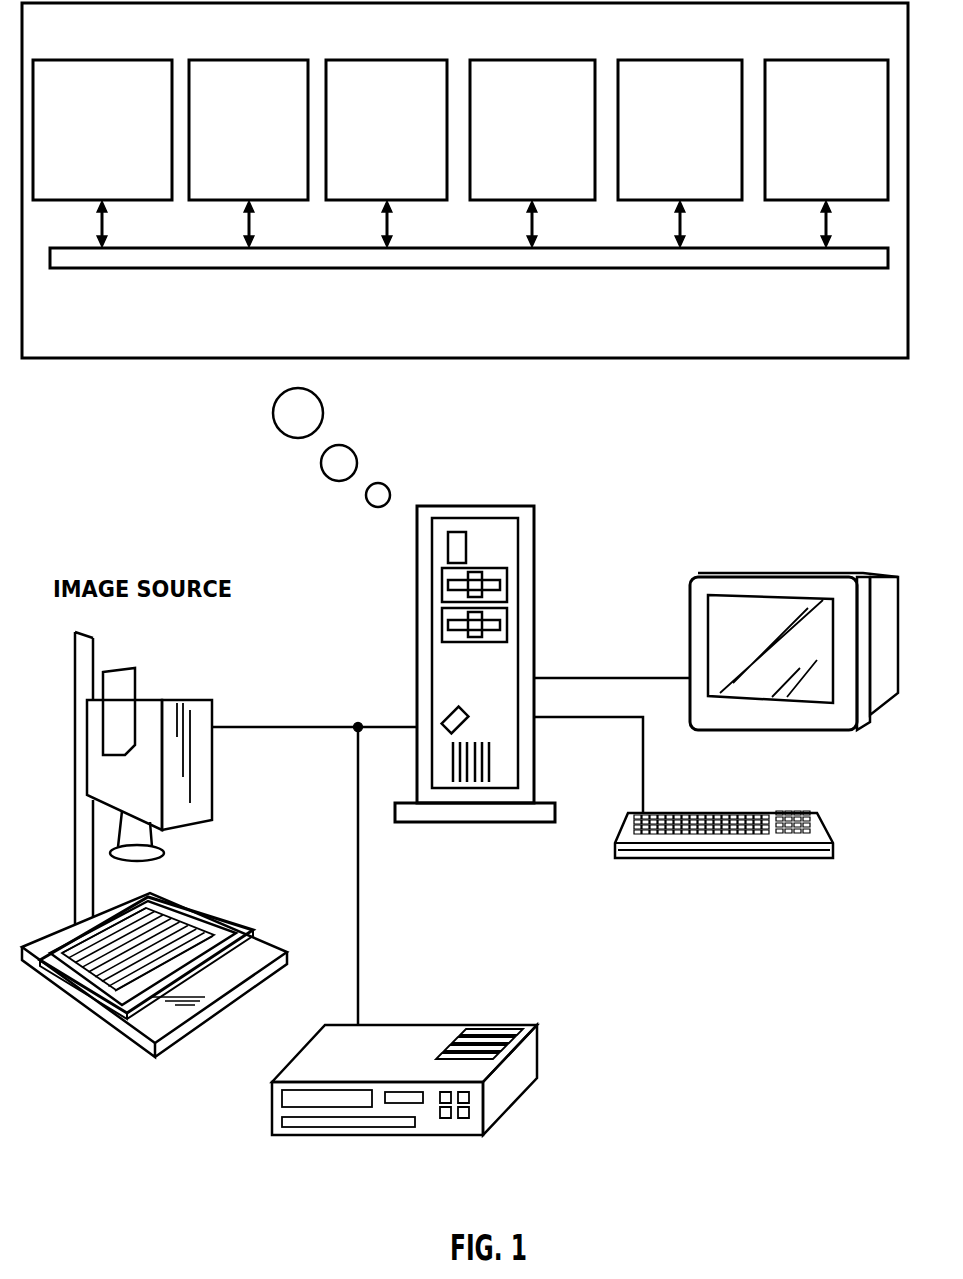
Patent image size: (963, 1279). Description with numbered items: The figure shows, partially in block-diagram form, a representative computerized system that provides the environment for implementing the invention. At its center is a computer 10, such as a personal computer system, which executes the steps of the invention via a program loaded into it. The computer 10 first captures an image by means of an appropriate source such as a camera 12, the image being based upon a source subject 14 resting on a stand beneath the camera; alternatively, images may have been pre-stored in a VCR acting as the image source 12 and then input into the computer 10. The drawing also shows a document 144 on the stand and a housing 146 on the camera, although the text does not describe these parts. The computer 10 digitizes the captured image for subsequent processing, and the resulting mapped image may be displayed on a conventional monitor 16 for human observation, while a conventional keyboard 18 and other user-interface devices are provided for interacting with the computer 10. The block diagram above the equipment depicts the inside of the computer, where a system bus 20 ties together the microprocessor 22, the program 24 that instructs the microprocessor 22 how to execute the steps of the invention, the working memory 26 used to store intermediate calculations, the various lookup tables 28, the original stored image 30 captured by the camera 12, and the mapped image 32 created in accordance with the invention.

The computer 10 is at (487, 506).
The camera 12 is at (197, 700).
The source subject 14 is at (245, 930).
The document on platform 144 is at (190, 908).
The camera lens housing 146 is at (212, 768).
The monitor 16 is at (688, 617).
The keyboard 18 is at (762, 810).
The system bus 20 is at (748, 270).
The microprocessor 22 is at (114, 183).
The program 24 is at (261, 183).
The working memory 26 is at (399, 183).
The lookup tables 28 is at (544, 183).
The original stored image 30 is at (692, 183).
The mapped image 32 is at (838, 183).